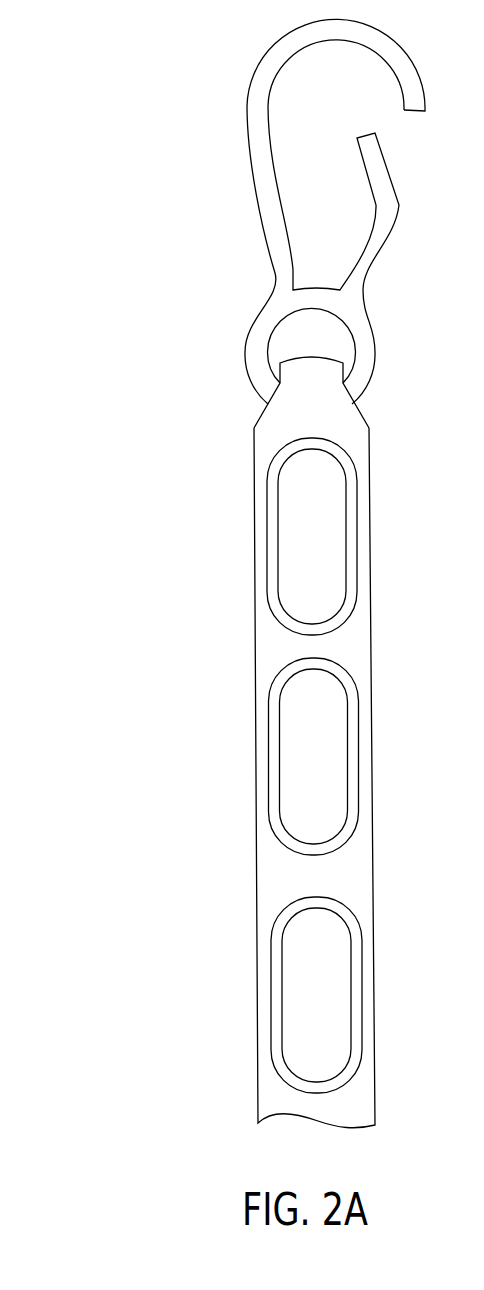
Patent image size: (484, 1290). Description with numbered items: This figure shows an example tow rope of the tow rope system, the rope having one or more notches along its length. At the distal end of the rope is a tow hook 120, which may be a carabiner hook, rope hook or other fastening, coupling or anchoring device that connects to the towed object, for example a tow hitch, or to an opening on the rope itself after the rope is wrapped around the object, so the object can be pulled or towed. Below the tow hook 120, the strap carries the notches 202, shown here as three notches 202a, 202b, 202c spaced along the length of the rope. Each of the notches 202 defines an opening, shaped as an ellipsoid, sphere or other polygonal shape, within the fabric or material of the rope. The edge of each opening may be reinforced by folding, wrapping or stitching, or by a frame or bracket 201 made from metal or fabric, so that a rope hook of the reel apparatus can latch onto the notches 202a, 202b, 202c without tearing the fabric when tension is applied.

The tow hook 120 is at (246, 99).
The notches 202 is at (165, 443).
The notch 202a is at (286, 535).
The notch 202b is at (282, 756).
The notch 202c is at (290, 953).
The frame or bracket 201 is at (273, 768).